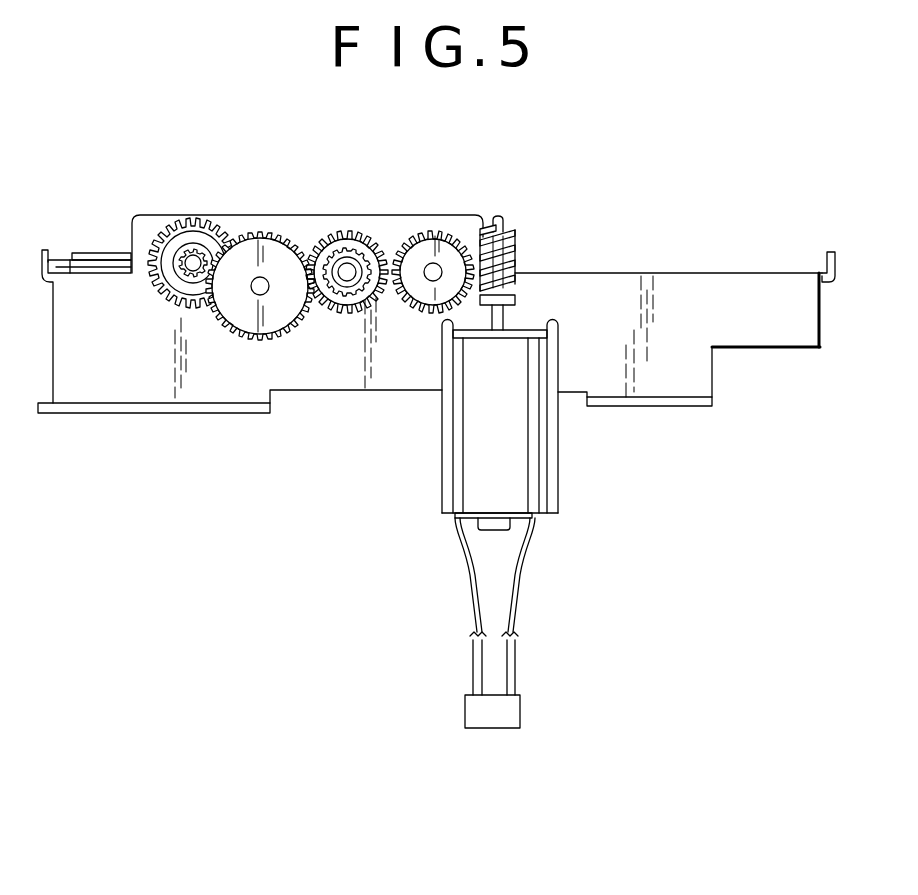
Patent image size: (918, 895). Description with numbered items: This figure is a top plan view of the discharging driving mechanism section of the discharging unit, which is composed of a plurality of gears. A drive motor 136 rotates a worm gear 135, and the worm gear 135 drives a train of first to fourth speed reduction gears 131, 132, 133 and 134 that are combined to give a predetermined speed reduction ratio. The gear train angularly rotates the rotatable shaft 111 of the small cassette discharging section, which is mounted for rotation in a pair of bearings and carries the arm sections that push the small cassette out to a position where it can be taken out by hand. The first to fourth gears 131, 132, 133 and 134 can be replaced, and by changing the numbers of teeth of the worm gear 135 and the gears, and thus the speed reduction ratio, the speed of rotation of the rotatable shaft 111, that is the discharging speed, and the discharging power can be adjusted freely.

The rotatable shaft 111 is at (183, 258).
The first speed reduction gear 131 is at (440, 232).
The second speed reduction gear 132 is at (341, 245).
The third speed reduction gear 133 is at (257, 230).
The fourth speed reduction gear 134 is at (170, 228).
The worm gear 135 is at (514, 252).
The drive motor 136 is at (512, 443).